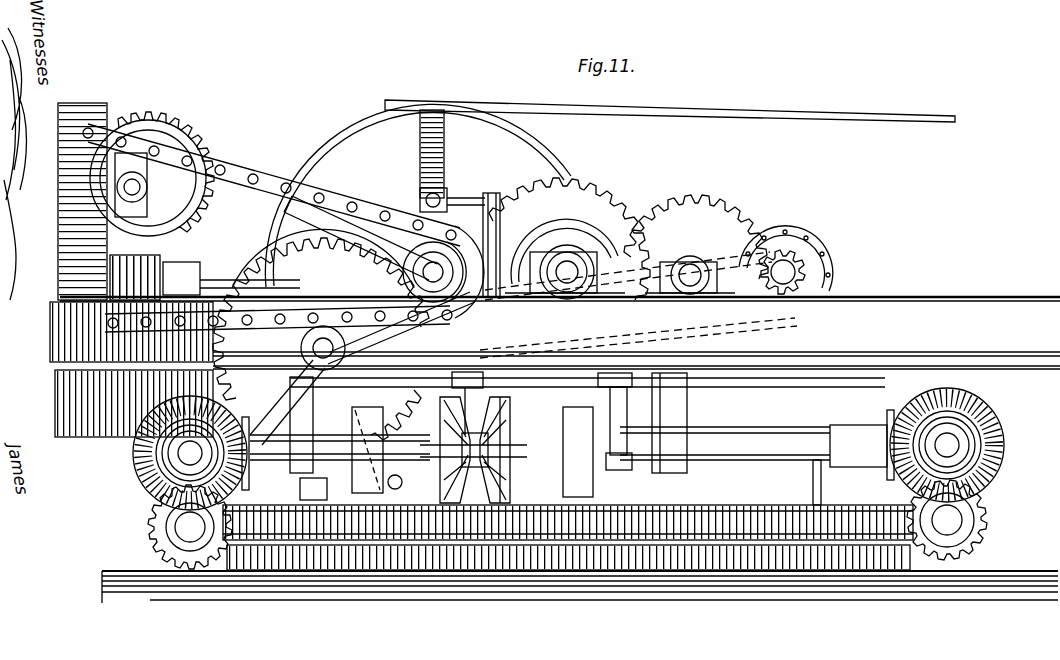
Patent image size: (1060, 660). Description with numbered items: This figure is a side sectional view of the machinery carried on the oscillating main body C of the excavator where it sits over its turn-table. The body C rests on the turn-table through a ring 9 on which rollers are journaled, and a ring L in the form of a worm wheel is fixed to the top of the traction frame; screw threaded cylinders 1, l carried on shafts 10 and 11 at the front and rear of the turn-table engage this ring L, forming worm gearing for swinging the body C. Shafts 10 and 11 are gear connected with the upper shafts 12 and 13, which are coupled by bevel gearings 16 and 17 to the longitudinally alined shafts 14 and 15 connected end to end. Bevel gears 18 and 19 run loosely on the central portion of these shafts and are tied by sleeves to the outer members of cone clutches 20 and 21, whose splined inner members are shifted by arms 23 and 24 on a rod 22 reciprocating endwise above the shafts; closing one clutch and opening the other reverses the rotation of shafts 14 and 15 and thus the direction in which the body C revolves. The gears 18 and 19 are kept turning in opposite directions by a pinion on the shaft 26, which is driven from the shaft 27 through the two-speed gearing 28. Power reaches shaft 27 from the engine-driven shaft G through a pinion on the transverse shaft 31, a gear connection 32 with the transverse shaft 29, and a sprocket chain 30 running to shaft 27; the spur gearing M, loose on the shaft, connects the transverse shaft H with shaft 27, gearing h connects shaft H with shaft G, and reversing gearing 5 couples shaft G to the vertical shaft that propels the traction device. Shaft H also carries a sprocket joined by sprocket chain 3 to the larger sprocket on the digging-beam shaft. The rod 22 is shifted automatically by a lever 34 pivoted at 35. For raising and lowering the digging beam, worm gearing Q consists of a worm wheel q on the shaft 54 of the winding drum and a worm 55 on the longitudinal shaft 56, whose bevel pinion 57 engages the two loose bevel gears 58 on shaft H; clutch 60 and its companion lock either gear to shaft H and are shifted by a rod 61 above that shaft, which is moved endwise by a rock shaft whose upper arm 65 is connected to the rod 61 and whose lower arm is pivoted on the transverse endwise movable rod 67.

The screw threaded cylinder 1 is at (692, 112).
The sprocket chain 3 is at (255, 172).
The reversing gearing 5 is at (573, 224).
The ring 9 is at (533, 145).
The shaft 10 is at (952, 518).
The shaft 11 is at (183, 527).
The upper shaft 12 is at (186, 454).
The upper shaft 13 is at (960, 445).
The shaft 14 is at (300, 478).
The shaft 15 is at (760, 443).
The bevel gearing 16 is at (230, 370).
The bevel gearing 17 is at (930, 417).
The bevel gear 18 is at (326, 481).
The bevel gear 19 is at (500, 505).
The cone clutch 20 is at (396, 415).
The cone clutch 21 is at (566, 404).
The rod 22 is at (521, 380).
The arm 23 is at (300, 437).
The arm 24 is at (623, 400).
The shaft 26 is at (527, 450).
The shaft 27 is at (312, 352).
The two-speed gearing 28 is at (133, 378).
The transverse shaft 29 is at (795, 280).
The sprocket chain 30 is at (778, 237).
The transverse shaft 31 is at (693, 294).
The gear connection 32 is at (770, 286).
The lever 34 is at (472, 374).
The pivot 35 is at (472, 505).
The shaft 54 is at (132, 187).
The worm 55 is at (122, 272).
The longitudinal shaft 56 is at (222, 270).
The bevel pinion 57 is at (345, 232).
The bevel gear 58 is at (398, 220).
The clutch 60 is at (495, 238).
The rod 61 is at (440, 196).
The arm 65 is at (456, 200).
The rod 67 is at (400, 484).
The main frame or body C is at (876, 377).
The shaft G is at (574, 295).
The transverse shaft H is at (480, 304).
The ring L is at (783, 571).
The spur gearing M is at (321, 332).
The worm gearing Q is at (165, 258).
The gearing h is at (613, 193).
The screw threaded cylinder l is at (146, 541).
The worm wheel q is at (185, 150).